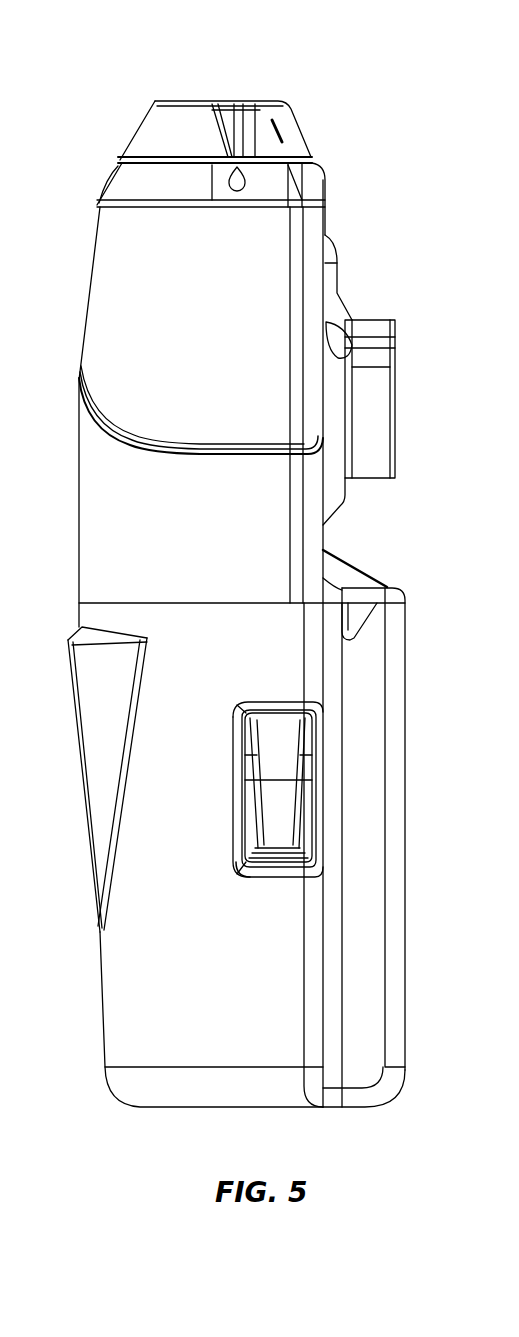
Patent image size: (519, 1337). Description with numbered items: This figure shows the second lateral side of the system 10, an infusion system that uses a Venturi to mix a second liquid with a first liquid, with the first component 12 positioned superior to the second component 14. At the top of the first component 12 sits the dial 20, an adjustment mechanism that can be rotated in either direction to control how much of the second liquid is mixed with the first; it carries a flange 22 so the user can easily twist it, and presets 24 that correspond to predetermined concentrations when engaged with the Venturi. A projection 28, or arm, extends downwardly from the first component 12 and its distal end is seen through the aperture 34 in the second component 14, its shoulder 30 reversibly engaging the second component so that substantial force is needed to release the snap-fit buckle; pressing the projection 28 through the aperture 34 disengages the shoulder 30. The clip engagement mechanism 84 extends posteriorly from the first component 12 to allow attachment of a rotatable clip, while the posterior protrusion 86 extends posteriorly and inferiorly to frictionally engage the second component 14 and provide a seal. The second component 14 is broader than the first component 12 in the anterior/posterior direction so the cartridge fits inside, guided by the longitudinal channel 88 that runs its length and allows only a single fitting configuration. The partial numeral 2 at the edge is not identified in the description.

The system 2 is at (4, 333).
The system 10 is at (372, 212).
The first component 12 is at (101, 495).
The second component 14 is at (163, 833).
The dial 20 is at (163, 132).
The flange 22 is at (244, 123).
The presets 24 is at (287, 133).
The projection 28 is at (281, 813).
The shoulder 30 is at (320, 723).
The aperture 34 is at (253, 872).
The clip engagement mechanism 84 is at (384, 412).
The posterior protrusion 86 is at (345, 575).
The longitudinal channel 88 is at (362, 1041).